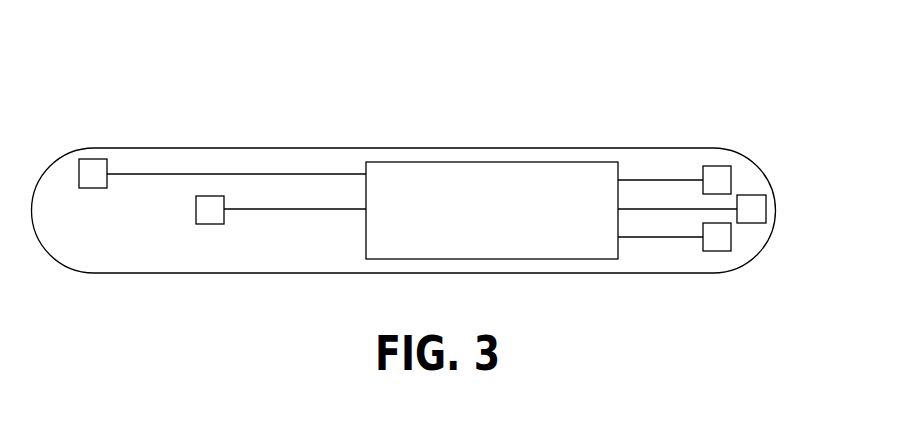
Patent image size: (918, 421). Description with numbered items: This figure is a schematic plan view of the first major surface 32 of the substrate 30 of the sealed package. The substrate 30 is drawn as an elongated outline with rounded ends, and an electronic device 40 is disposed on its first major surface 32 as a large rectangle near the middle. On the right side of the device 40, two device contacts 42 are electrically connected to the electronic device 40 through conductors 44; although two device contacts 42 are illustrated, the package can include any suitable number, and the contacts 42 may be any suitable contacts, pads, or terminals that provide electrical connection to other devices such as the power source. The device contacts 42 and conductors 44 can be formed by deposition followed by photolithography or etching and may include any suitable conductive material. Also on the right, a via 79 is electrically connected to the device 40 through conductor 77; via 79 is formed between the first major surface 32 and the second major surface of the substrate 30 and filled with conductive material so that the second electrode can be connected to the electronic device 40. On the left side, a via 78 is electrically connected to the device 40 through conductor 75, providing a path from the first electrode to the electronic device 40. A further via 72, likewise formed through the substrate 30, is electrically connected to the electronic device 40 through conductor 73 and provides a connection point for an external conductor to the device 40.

The substrate 30 is at (548, 89).
The first major surface 32 is at (124, 258).
The electronic device 40 is at (432, 150).
The device contacts 42 is at (705, 166).
The conductors 44 is at (655, 180).
The via 72 is at (219, 225).
The conductor 73 is at (273, 210).
The conductor 75 is at (139, 173).
The conductor 77 is at (662, 210).
The via 78 is at (94, 158).
The via 79 is at (767, 210).